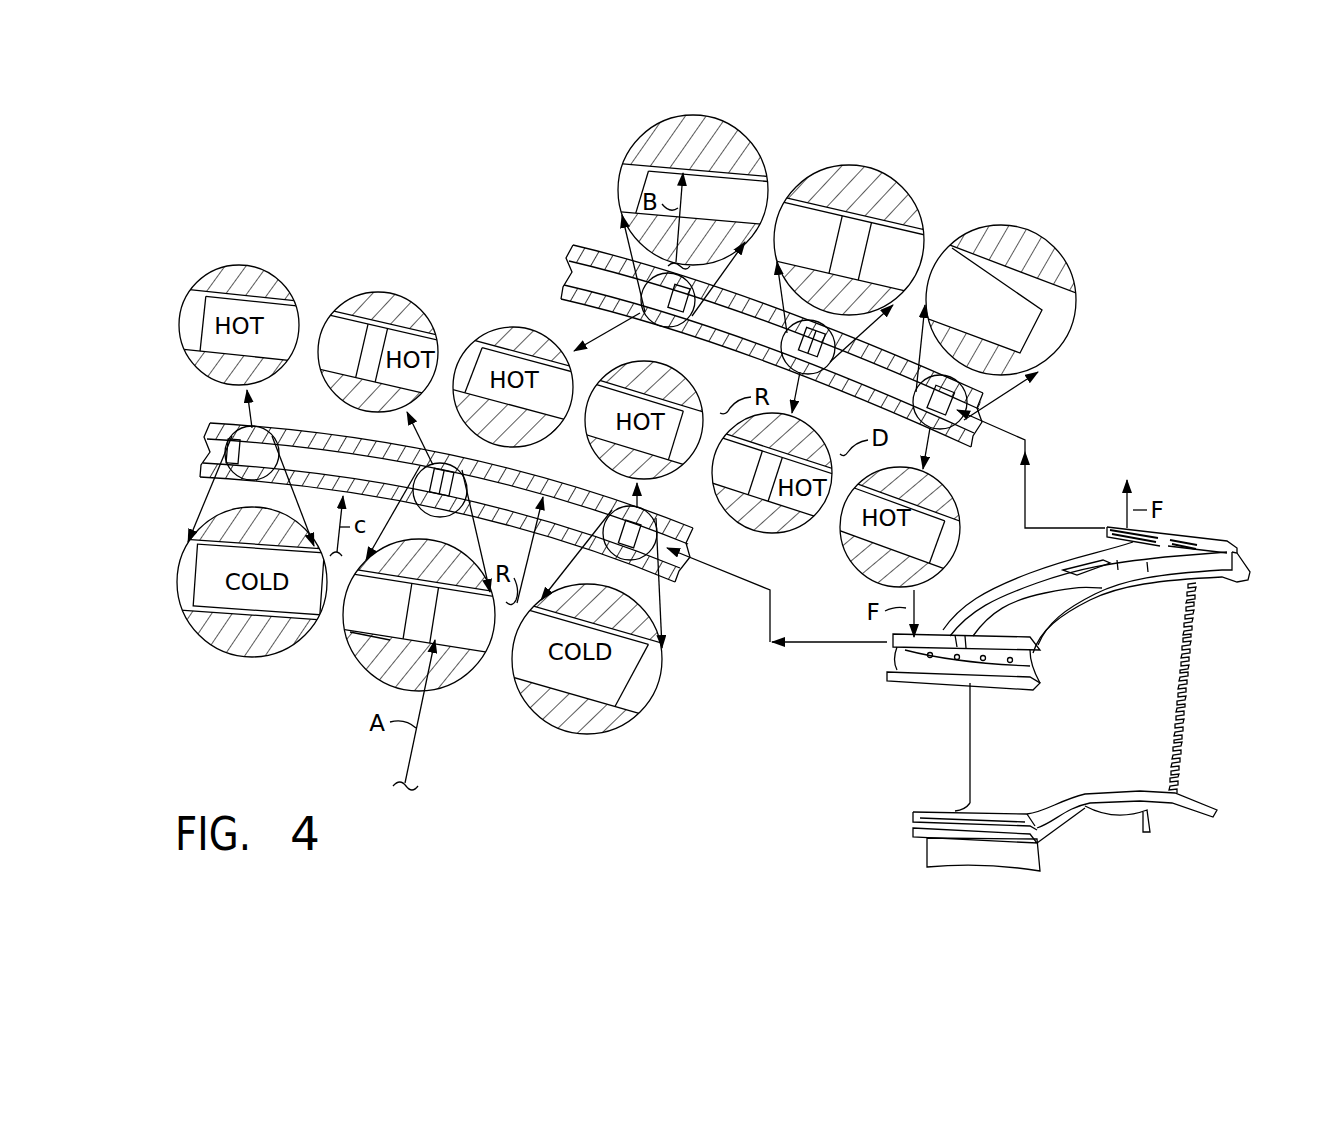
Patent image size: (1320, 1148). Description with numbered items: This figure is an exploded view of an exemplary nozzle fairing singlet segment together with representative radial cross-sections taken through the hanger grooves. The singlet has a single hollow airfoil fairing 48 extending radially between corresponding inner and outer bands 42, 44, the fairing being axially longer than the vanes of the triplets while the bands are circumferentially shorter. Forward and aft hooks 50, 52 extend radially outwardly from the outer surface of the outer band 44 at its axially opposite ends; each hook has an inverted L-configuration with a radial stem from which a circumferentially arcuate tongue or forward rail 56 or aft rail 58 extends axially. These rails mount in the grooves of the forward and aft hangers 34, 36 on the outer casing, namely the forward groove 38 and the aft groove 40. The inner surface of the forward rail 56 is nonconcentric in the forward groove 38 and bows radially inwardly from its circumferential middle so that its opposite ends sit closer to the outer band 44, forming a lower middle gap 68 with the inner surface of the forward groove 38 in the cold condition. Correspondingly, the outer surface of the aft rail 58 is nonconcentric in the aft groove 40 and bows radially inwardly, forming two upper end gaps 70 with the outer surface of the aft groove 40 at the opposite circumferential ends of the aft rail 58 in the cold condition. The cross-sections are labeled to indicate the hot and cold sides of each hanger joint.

The forward hanger 34 is at (212, 426).
The aft hanger 36 is at (572, 248).
The forward groove 38 is at (213, 448).
The aft groove 40 is at (596, 290).
The inner band 42 is at (1064, 822).
The outer band 44 is at (1037, 570).
The airfoil fairing 48 is at (1078, 705).
The forward hook 50 is at (940, 672).
The aft hook 52 is at (1178, 538).
The forward rail 56 is at (447, 627).
The aft rail 58 is at (872, 263).
The lower middle gap 68 is at (367, 633).
The upper end gaps 70 is at (632, 158).